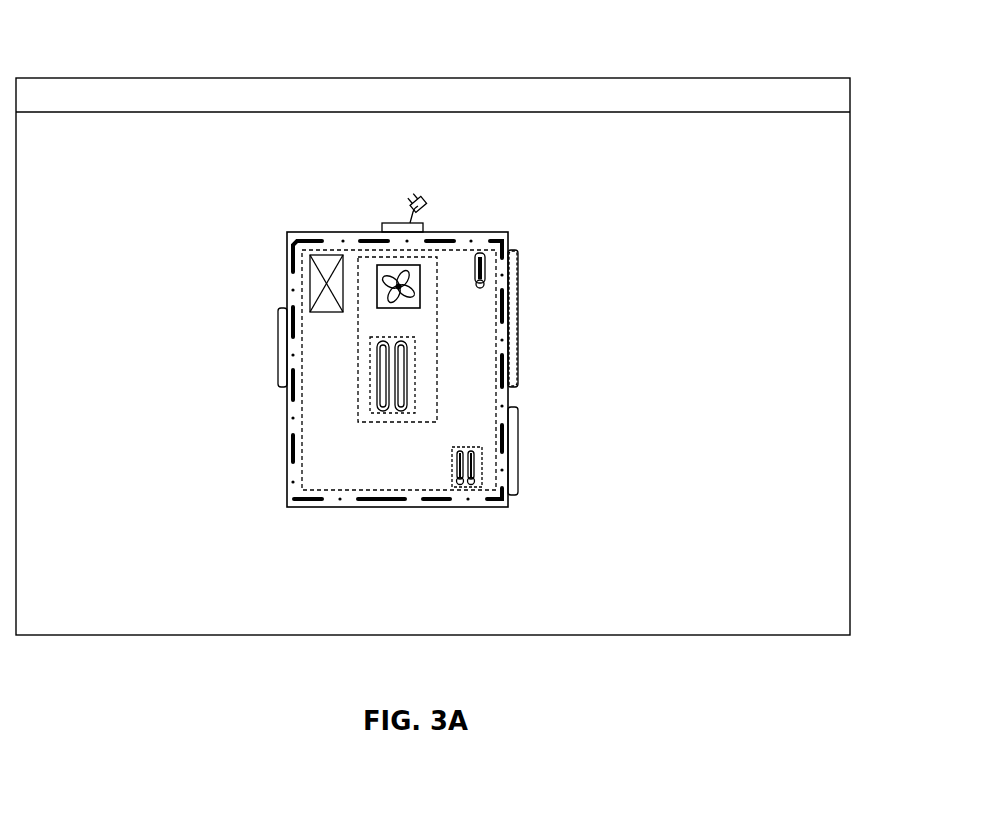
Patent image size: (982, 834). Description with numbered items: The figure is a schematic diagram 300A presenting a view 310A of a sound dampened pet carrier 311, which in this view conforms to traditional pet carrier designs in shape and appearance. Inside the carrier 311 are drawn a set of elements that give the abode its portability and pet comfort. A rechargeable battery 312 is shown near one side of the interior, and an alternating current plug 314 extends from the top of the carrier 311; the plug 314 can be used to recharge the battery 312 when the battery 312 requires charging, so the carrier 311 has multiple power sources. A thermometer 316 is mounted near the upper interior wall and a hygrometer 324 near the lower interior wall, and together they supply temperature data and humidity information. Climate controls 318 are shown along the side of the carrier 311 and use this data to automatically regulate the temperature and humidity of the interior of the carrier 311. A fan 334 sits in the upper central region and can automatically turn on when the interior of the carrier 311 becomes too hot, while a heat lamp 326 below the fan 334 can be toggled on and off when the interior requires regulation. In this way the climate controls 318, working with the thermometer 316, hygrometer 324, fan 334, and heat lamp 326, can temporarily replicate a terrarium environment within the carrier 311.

The environment 300A is at (832, 37).
The view 310A is at (433, 356).
The sound dampened pet carrier 311 is at (315, 507).
The rechargeable battery 312 is at (328, 255).
The alternating current (A/C) plug 314 is at (422, 227).
The thermometer 316 is at (487, 253).
The climate controls 318 is at (517, 285).
The hygrometer 324 is at (482, 463).
The heat lamp 326 is at (390, 415).
The fan 334 is at (408, 283).